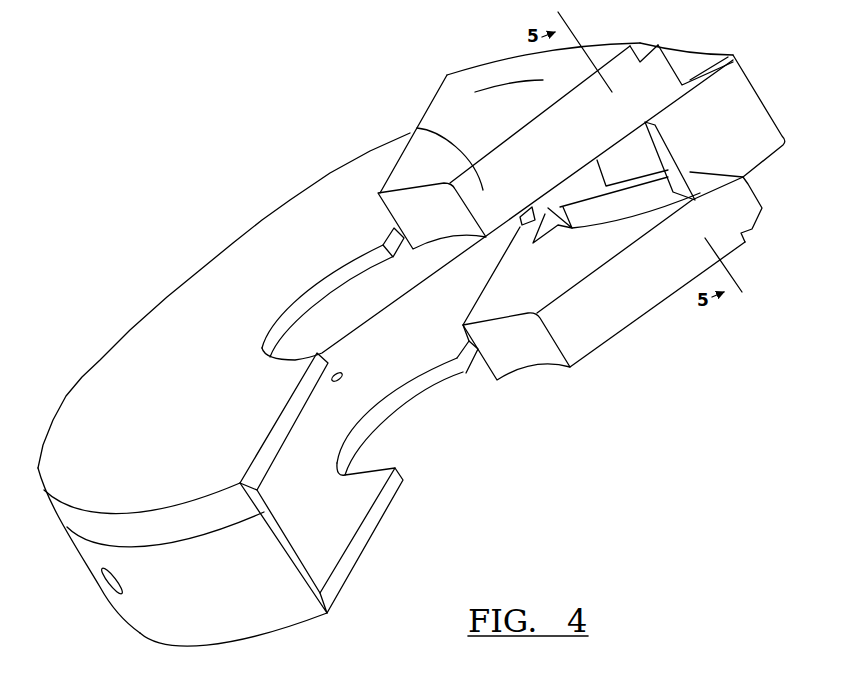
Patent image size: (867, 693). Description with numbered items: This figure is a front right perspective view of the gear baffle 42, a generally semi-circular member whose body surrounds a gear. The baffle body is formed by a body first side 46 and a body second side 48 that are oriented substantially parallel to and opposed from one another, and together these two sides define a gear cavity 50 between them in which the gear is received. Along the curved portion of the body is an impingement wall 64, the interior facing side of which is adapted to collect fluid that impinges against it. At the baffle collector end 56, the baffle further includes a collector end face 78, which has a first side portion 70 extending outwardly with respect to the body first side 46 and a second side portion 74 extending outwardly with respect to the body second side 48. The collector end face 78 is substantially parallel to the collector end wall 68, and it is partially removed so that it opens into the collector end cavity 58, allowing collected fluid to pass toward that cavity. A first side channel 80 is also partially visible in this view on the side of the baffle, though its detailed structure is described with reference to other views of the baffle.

The baffle 42 is at (785, 102).
The body first side 46 is at (397, 417).
The body second side 48 is at (298, 297).
The gear cavity 50 is at (327, 552).
The baffle collector end 56 is at (417, 78).
The collector end cavity 58 is at (567, 267).
The impingement wall 64 is at (755, 82).
The collector end wall 68 is at (475, 92).
The first side portion 70 is at (578, 348).
The second side portion 74 is at (417, 128).
The collector end face 78 is at (745, 148).
The first side channel 80 is at (632, 163).